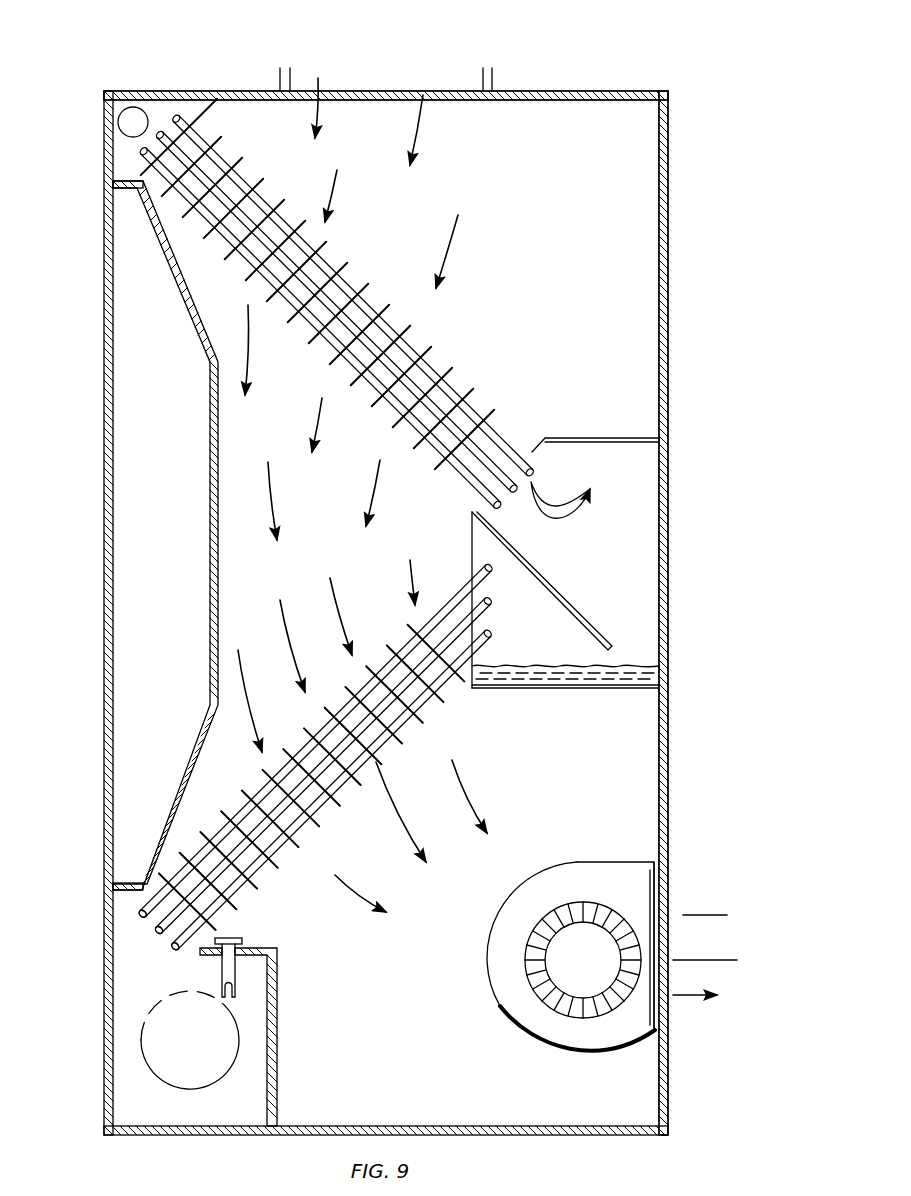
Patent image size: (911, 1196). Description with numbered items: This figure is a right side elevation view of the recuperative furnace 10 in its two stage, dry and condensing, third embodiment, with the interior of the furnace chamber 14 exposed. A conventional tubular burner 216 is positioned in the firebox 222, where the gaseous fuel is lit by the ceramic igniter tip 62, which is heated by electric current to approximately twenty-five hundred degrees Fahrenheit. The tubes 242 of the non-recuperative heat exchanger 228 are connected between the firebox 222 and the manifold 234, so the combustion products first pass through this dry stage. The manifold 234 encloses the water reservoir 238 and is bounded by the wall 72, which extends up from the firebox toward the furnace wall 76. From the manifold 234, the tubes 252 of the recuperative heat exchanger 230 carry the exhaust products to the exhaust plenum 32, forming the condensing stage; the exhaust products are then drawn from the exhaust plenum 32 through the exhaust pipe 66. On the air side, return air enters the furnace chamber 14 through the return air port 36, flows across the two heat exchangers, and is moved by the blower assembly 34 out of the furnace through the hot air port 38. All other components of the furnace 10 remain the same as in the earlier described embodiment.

The recuperative furnace 10 is at (578, 78).
The furnace chamber 14 is at (632, 275).
The exhaust plenum 32 is at (120, 163).
The blower assembly 34 is at (626, 1028).
The return air port 36 is at (370, 92).
The hot air port 38 is at (653, 885).
The ceramic igniter tip 62 is at (226, 968).
The exhaust pipe 66 is at (135, 107).
The wall 72 is at (140, 902).
The furnace wall 76 is at (108, 330).
The tubular burner 216 is at (143, 1060).
The firebox 222 is at (124, 1104).
The non-recuperative heat exchanger 228 is at (458, 696).
The recuperative heat exchanger 230 is at (466, 368).
The manifold 234 is at (645, 553).
The water reservoir 238 is at (630, 676).
The tubes 242 is at (172, 952).
The tubes 252 is at (571, 488).